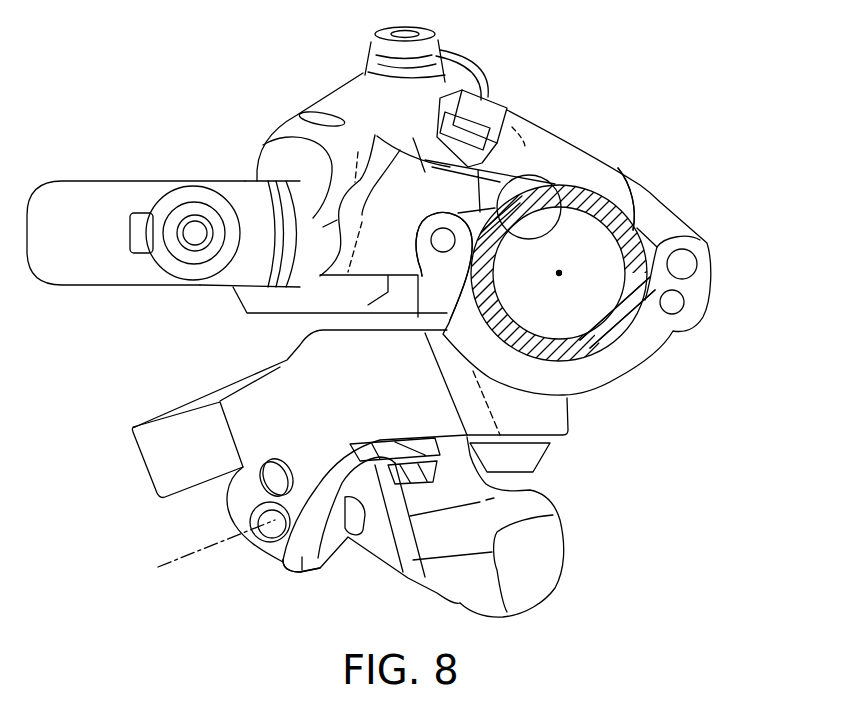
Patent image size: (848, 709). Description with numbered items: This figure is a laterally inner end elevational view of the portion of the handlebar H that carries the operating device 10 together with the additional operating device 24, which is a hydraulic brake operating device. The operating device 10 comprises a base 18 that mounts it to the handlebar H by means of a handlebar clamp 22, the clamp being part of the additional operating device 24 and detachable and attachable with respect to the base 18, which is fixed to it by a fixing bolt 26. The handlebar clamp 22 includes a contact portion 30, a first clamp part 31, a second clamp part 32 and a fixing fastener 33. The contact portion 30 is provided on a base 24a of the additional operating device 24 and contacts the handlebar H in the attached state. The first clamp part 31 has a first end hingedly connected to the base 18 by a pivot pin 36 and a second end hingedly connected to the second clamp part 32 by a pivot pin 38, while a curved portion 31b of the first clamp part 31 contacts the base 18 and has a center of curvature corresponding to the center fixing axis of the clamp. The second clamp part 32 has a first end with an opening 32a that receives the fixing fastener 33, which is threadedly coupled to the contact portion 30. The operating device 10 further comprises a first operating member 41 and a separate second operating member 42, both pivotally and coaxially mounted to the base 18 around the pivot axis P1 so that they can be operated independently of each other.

The operating device 10 is at (624, 468).
The base 18 is at (576, 417).
The handlebar clamp 22 is at (664, 191).
The additional operating device 24 is at (318, 96).
The base of the additional operating device 24a is at (410, 150).
The fixing bolt 26 is at (537, 464).
The contact portion 30 is at (554, 207).
The first clamp part 31 is at (641, 362).
The curved portion 31b is at (533, 333).
The second clamp part 32 is at (615, 165).
The opening 32a is at (524, 138).
The fixing fastener 33 is at (502, 106).
The pivot pin 36 is at (433, 224).
The pivot pin 38 is at (692, 277).
The first operating member 41 is at (550, 586).
The second operating member 42 is at (338, 571).
The handlebar H is at (632, 193).
The pivot axis P1 is at (167, 568).